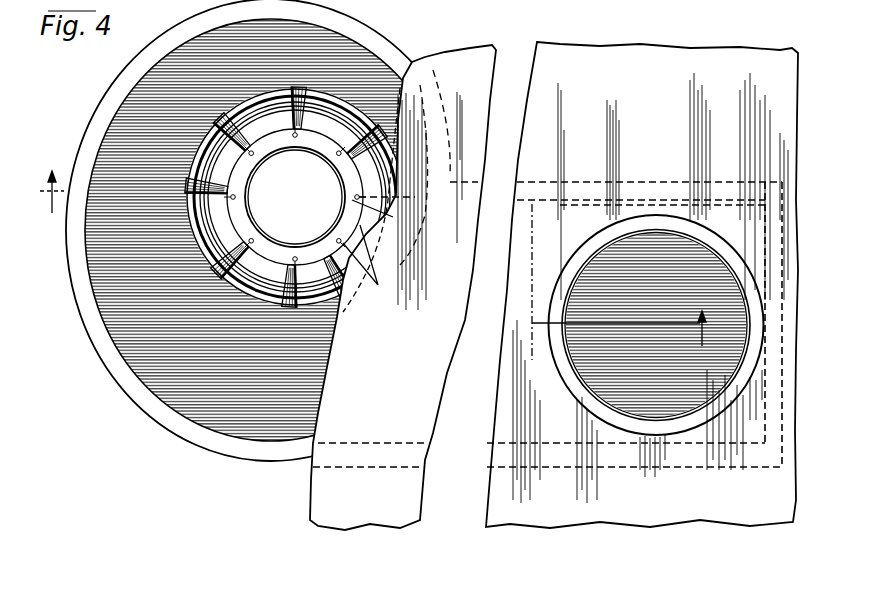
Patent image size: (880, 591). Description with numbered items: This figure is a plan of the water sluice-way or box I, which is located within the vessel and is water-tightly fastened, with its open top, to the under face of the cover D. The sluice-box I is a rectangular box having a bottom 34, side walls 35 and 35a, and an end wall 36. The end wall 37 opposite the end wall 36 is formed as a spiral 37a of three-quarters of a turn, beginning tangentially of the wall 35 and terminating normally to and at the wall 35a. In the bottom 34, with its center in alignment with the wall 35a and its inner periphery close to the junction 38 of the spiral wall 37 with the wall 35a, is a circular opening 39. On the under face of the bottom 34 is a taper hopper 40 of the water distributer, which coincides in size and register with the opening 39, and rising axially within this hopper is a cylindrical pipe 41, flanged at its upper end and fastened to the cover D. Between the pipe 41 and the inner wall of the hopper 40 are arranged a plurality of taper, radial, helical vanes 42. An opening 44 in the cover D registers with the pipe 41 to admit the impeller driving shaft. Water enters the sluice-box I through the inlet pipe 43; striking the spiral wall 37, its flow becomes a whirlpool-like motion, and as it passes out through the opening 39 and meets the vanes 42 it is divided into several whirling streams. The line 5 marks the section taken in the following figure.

The spiral 37a is at (95, 172).
The end wall 37 is at (101, 287).
The taper hopper 40 is at (190, 236).
The bottom 34 is at (211, 256).
The circular opening 39 is at (241, 299).
The taper radial helical vanes 42 is at (294, 118).
The cylindrical pipe 41 is at (247, 183).
The opening 44 is at (295, 197).
The junction 38 is at (416, 207).
The cover D is at (554, 286).
The inlet pipe 43 is at (562, 315).
The side wall 35 is at (545, 447).
The end wall 36 is at (750, 438).
The side wall 35a is at (570, 200).
The section line 5- 5 is at (374, 265).
The water sluice-box I is at (312, 443).